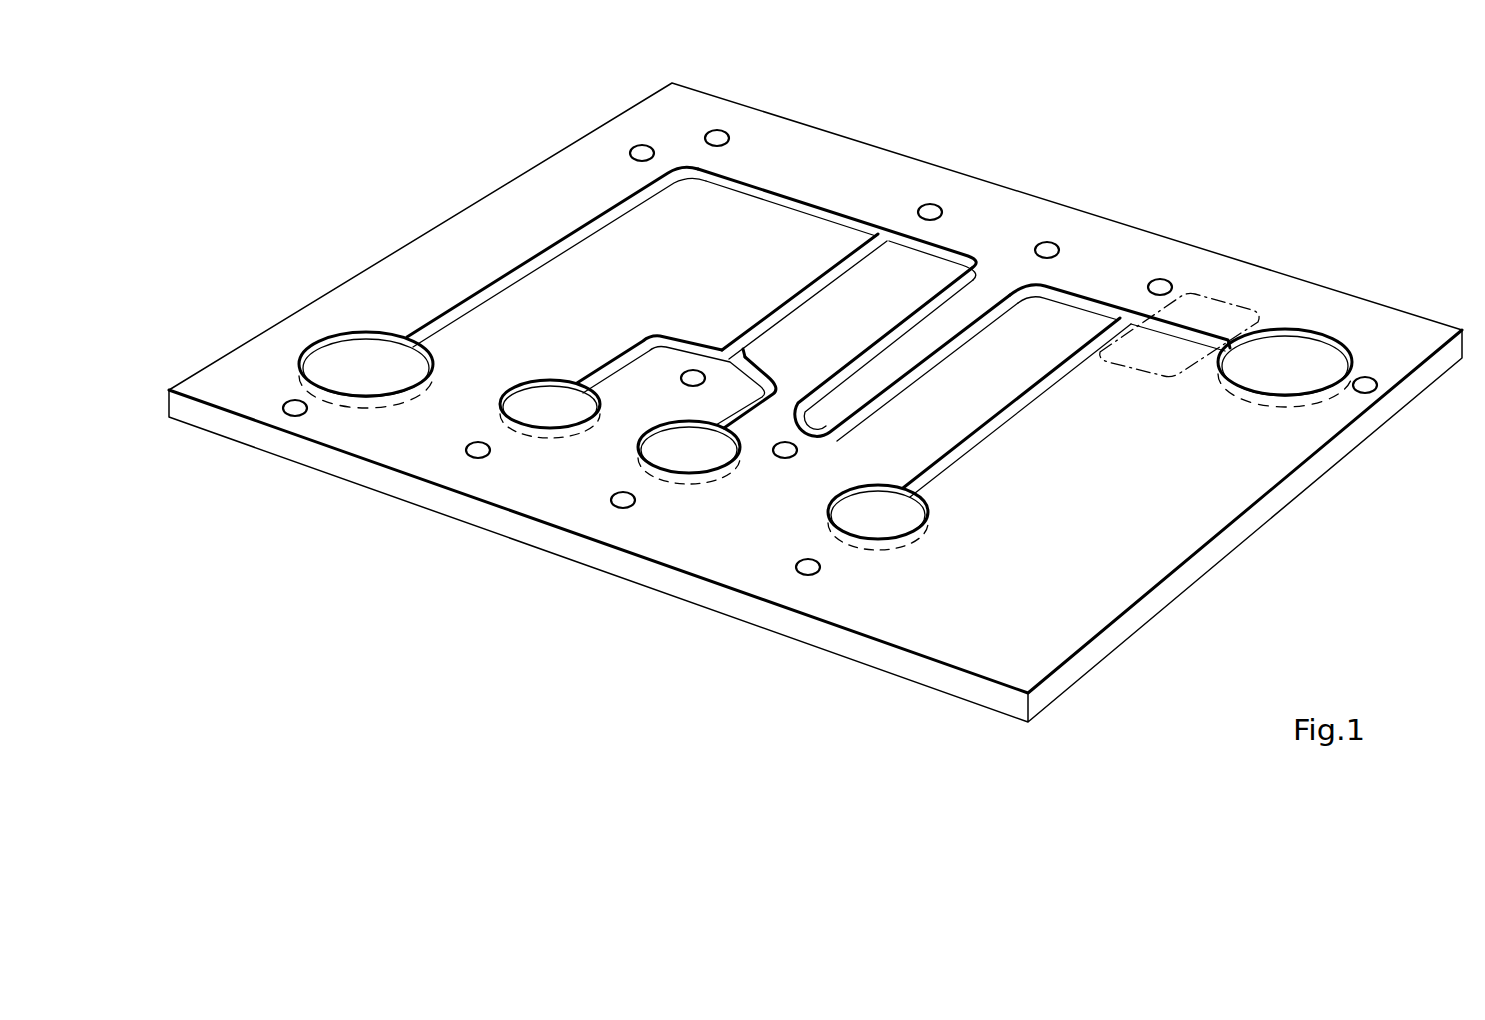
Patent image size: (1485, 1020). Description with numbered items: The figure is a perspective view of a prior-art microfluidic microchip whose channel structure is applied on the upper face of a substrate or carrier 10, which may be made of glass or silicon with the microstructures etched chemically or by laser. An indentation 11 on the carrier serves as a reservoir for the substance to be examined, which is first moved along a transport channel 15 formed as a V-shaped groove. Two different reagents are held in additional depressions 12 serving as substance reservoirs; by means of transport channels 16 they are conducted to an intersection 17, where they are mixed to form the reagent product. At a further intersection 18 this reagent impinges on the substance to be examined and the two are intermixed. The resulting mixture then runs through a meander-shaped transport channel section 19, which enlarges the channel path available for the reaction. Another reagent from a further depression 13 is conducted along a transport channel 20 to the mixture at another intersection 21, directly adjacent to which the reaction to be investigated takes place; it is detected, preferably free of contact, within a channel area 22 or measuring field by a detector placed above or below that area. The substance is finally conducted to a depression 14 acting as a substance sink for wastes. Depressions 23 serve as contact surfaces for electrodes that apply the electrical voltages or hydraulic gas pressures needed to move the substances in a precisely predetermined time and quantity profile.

The carrier 10 is at (681, 586).
The indentation 11 is at (328, 356).
The depressions 12 is at (541, 419).
The depression 13 is at (890, 528).
The depression 14 is at (1318, 348).
The transport channel 15 is at (508, 273).
The transport channels 16 is at (621, 352).
The intersection 17 is at (714, 325).
The intersection 18 is at (889, 210).
The meander-shaped transport channel section 19 is at (920, 374).
The transport channel 20 is at (1023, 400).
The intersection 21 is at (1119, 280).
The channel area 22 is at (1242, 288).
The depressions 23 is at (640, 145).